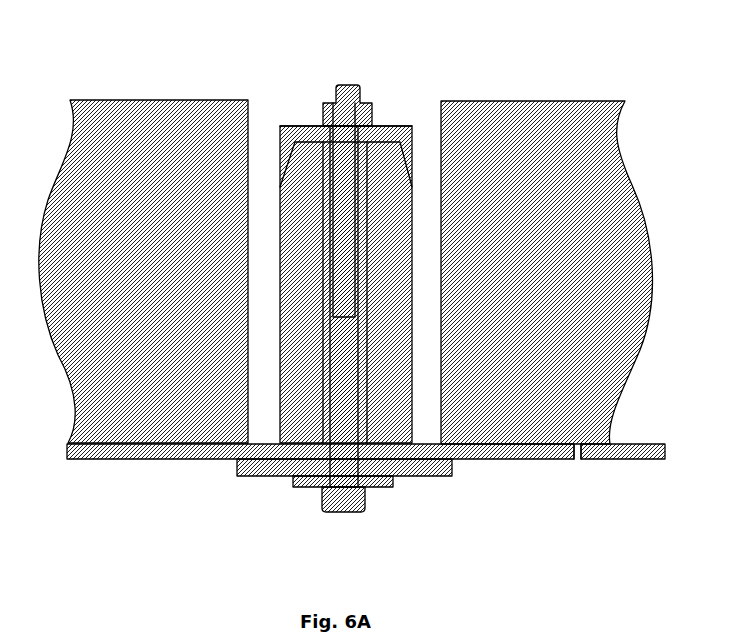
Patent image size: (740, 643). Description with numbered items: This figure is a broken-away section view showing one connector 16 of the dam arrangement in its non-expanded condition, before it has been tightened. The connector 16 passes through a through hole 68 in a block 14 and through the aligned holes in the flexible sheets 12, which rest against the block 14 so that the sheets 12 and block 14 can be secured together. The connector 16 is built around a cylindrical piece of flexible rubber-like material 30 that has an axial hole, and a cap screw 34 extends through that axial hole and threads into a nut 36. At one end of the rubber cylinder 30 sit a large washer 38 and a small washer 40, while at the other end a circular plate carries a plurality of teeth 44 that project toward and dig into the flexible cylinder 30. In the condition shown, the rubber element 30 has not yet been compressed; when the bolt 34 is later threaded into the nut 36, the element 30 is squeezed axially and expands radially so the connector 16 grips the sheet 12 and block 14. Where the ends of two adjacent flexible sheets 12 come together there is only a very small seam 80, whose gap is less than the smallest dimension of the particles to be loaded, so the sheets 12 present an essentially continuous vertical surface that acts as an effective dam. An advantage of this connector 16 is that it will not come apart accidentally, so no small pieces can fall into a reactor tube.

The flexible sheet 12 is at (133, 460).
The block 14 is at (102, 356).
The connector 16 is at (404, 84).
The flexible rubber-like cylinder 30 is at (290, 243).
The cap screw 34 is at (360, 513).
The nut 36 is at (323, 125).
The large washer 38 is at (240, 478).
The small washer 40 is at (300, 488).
The teeth 44 is at (413, 126).
The through hole 68 is at (248, 108).
The seam 80 is at (578, 460).